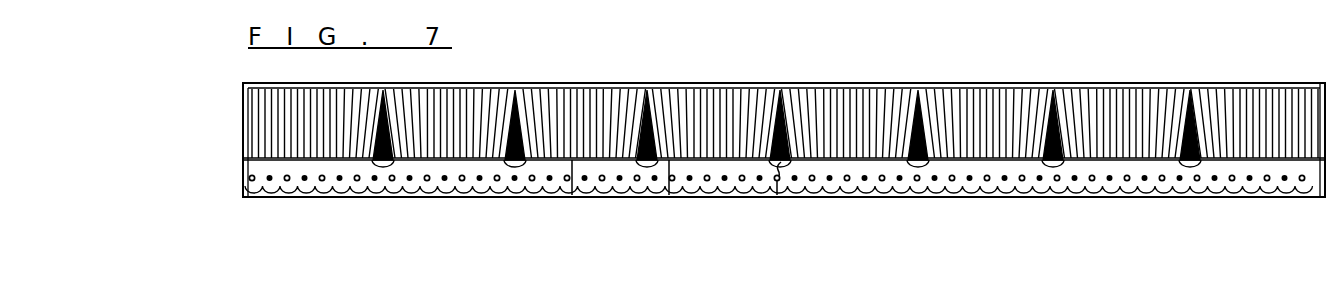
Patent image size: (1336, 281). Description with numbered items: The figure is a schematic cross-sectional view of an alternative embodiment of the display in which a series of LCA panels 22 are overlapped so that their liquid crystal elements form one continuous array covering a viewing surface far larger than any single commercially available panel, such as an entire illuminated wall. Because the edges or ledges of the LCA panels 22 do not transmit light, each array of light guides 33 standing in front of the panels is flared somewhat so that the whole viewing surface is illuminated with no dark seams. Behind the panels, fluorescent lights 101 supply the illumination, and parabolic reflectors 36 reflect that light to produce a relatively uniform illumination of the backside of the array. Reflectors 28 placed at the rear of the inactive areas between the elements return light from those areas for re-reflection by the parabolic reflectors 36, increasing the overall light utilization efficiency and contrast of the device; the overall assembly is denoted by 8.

The brush body 8 is at (700, 84).
The light guides 33 is at (843, 90).
The LCA panels 22 is at (572, 195).
The reflectors 28 is at (777, 195).
The fluorescent lights 101 is at (445, 181).
The parabolic reflectors 36 is at (385, 193).